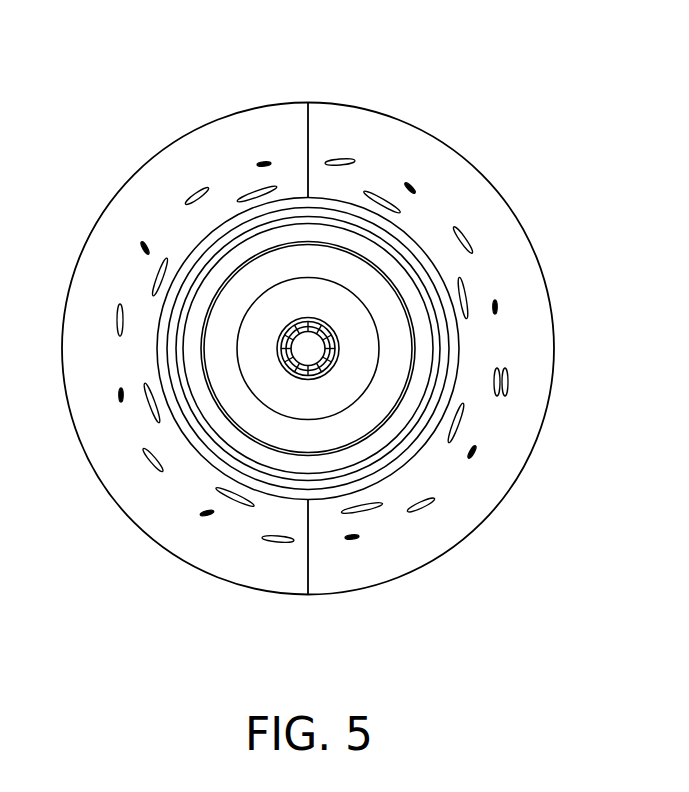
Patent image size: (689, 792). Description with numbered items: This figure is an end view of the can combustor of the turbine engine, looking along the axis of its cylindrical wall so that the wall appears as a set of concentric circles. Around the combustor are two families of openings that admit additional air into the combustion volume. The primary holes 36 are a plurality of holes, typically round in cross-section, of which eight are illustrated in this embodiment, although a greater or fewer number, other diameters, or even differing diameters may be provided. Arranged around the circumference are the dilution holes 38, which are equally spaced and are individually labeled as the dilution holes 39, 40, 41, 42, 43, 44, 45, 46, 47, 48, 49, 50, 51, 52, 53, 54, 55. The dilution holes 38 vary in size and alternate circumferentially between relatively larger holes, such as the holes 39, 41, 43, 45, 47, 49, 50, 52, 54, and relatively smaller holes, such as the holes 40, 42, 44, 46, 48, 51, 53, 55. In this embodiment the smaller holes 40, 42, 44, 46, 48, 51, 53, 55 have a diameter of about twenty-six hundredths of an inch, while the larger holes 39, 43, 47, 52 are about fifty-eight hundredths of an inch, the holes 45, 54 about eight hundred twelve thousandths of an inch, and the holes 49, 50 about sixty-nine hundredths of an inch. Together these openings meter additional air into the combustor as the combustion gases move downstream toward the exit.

The primary holes 36 is at (95, 261).
The dilution holes 38 is at (308, 304).
The dilution hole 39 is at (193, 190).
The dilution hole 40 is at (143, 246).
The dilution hole 41 is at (115, 318).
The dilution hole 42 is at (118, 395).
The dilution hole 43 is at (147, 468).
The dilution hole 44 is at (206, 516).
The dilution hole 45 is at (277, 545).
The dilution hole 46 is at (352, 540).
The dilution hole 47 is at (422, 508).
The dilution hole 48 is at (474, 454).
The dilution hole 49 is at (496, 398).
The dilution hole 50 is at (508, 383).
The dilution hole 51 is at (498, 307).
The dilution hole 52 is at (468, 236).
The dilution hole 53 is at (412, 186).
The dilution hole 54 is at (340, 158).
The dilution hole 55 is at (262, 162).